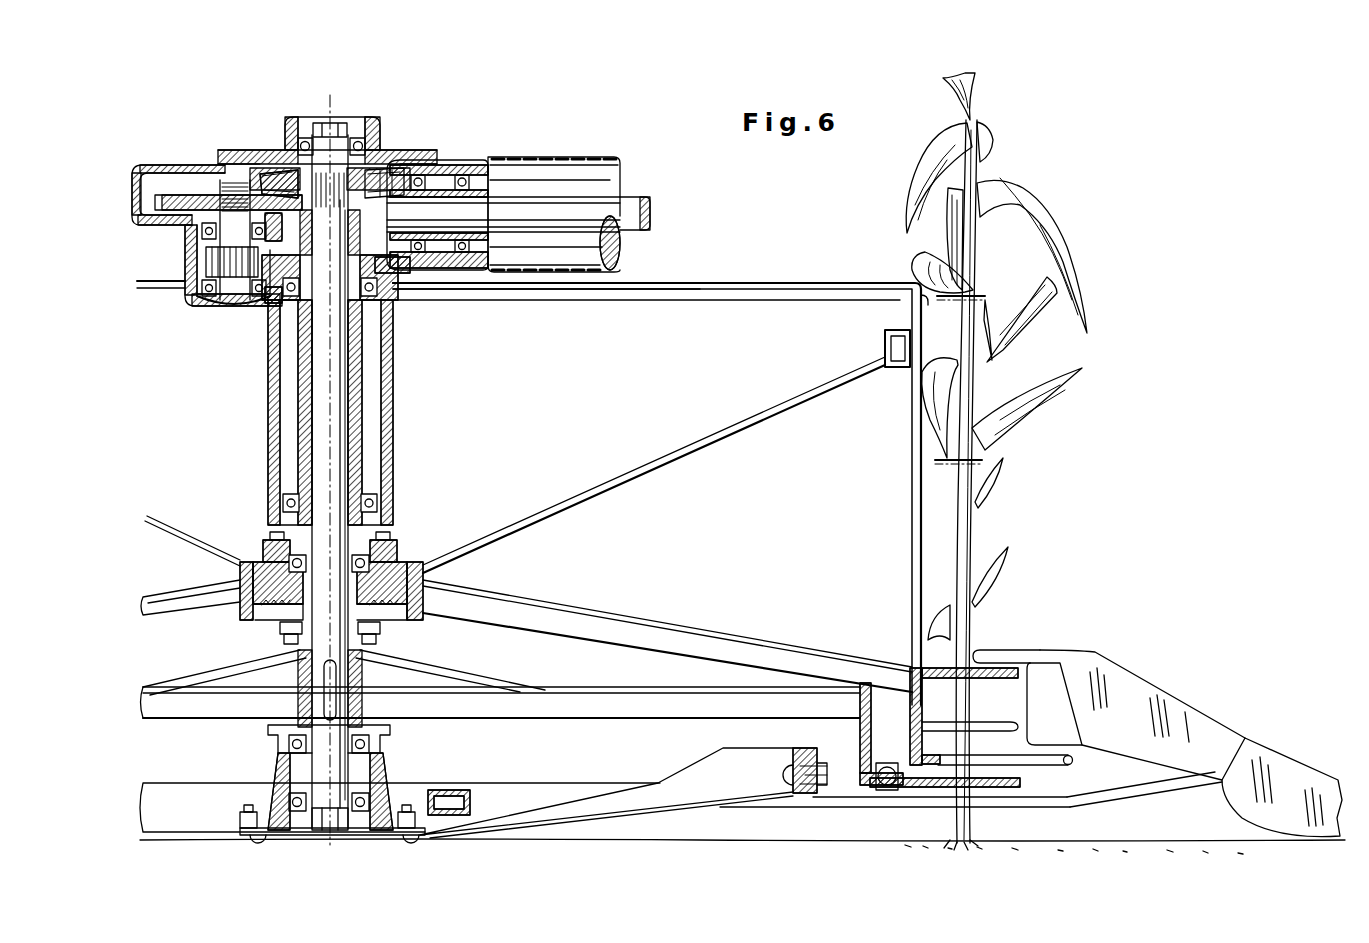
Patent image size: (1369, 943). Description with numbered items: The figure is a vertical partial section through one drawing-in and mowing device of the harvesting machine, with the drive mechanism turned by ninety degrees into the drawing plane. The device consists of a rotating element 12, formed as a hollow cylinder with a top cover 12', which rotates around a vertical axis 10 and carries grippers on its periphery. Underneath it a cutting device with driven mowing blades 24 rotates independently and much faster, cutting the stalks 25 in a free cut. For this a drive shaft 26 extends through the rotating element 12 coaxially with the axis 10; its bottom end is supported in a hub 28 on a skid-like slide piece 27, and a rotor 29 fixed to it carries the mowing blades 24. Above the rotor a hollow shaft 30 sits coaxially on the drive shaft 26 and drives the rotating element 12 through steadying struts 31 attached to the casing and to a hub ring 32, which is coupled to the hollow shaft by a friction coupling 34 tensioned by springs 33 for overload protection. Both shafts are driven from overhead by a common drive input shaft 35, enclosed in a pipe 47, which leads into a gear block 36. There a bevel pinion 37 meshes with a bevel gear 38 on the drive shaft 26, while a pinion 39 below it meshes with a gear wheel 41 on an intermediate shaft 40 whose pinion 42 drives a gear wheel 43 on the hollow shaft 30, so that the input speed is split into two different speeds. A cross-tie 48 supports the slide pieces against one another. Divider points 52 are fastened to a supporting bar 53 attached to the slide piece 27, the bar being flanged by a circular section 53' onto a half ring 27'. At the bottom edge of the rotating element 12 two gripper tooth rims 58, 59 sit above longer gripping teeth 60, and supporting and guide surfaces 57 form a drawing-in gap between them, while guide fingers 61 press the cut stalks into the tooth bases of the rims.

The vertical rotating axis 10 is at (332, 117).
The rotating element 12 is at (705, 524).
The top cover 12' is at (609, 263).
The mowing blades 24 is at (918, 789).
The stalks 25 is at (973, 600).
The drive shaft 26 is at (347, 636).
The slide piece 27 is at (605, 791).
The half ring 27' is at (778, 770).
The hub 28 is at (388, 768).
The rotor 29 is at (537, 688).
The hollow shaft 30 is at (365, 423).
The steadying struts 31 is at (732, 426).
The hub ring 32 is at (418, 562).
The springs 33 is at (283, 630).
The friction coupling 34 is at (244, 616).
The drive input shaft 35 is at (636, 203).
The gear block 36 is at (227, 150).
The bevel pinion 37 is at (415, 255).
The bevel gear 38 is at (403, 160).
The pinion 39 is at (293, 163).
The intermediate shaft 40 is at (192, 247).
The gear wheel 41 is at (170, 195).
The pinion 42 is at (190, 296).
The gear wheel 43 is at (277, 308).
The pipe 47 is at (550, 185).
The cross-tie 48 is at (465, 790).
The divider points 52 is at (1265, 763).
The supporting bar 53 is at (1143, 805).
The circular section 53' is at (816, 752).
The supporting and guide surfaces 57 is at (1067, 704).
The top gripper tooth rim 58 is at (1053, 658).
The gripper tooth rim 59 is at (1000, 726).
The gripping teeth 60 is at (1072, 757).
The guide fingers 61 is at (1016, 657).